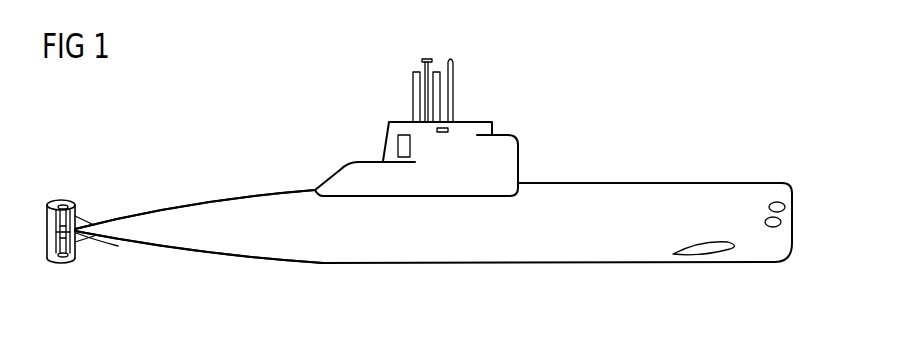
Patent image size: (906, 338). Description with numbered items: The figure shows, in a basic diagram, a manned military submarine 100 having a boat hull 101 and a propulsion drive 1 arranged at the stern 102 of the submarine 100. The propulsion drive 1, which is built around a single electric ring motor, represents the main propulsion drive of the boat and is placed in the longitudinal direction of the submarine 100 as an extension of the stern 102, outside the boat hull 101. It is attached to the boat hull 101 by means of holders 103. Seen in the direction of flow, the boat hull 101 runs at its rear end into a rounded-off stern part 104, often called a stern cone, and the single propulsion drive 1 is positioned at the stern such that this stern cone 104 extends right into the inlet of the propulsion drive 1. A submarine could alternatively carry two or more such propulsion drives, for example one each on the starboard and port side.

The propulsion drive 1 is at (62, 200).
The submarine 100 is at (433, 148).
The boat hull 101 is at (602, 182).
The stern 102 is at (130, 213).
The holders 103 is at (77, 244).
The stern part 104 is at (127, 247).